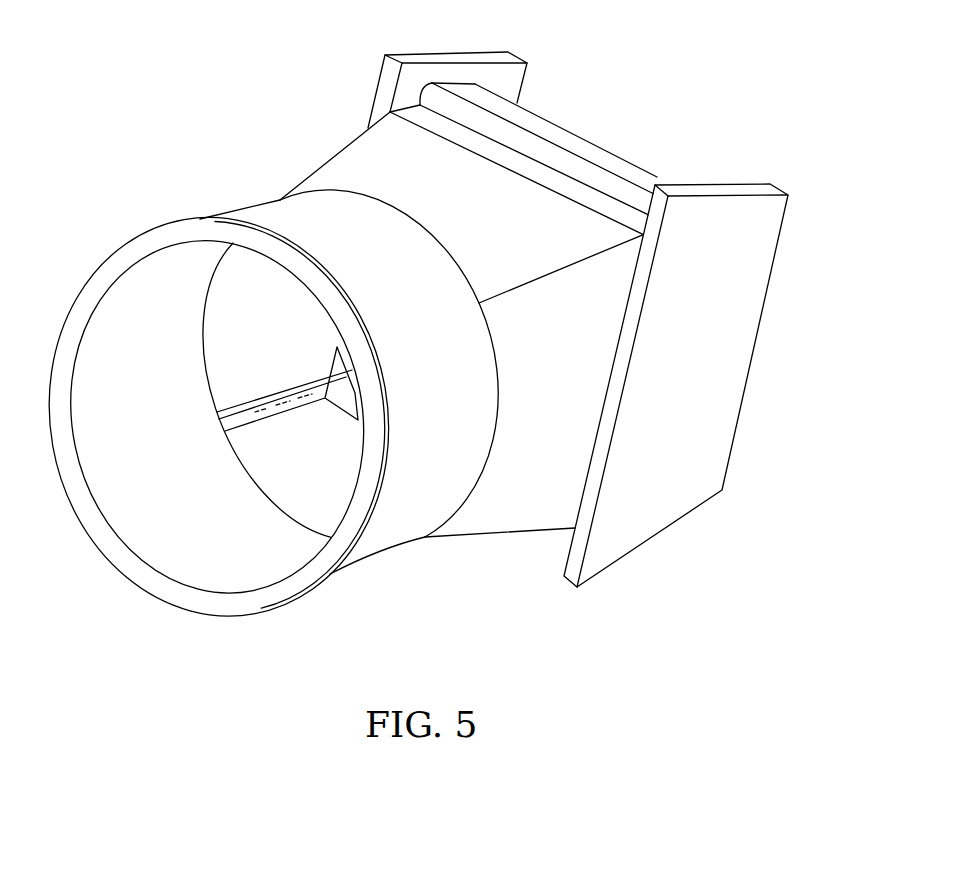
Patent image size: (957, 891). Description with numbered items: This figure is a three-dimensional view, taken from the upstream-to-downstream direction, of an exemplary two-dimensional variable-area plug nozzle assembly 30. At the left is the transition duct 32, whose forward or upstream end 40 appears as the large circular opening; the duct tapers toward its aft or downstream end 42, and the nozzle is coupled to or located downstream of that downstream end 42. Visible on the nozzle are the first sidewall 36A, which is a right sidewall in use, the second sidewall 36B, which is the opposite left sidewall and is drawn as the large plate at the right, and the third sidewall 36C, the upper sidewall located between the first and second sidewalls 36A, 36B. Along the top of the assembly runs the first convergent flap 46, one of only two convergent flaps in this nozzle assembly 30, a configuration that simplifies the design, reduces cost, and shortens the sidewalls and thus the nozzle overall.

The 2D VAP nozzle assembly 30 is at (445, 324).
The transition duct 32 is at (152, 518).
The first sidewall 36A is at (418, 83).
The second sidewall 36B is at (657, 513).
The third sidewall 36C is at (624, 217).
The upstream end 40 is at (280, 207).
The downstream end 42 is at (382, 157).
The first convergent flap 46 is at (608, 170).